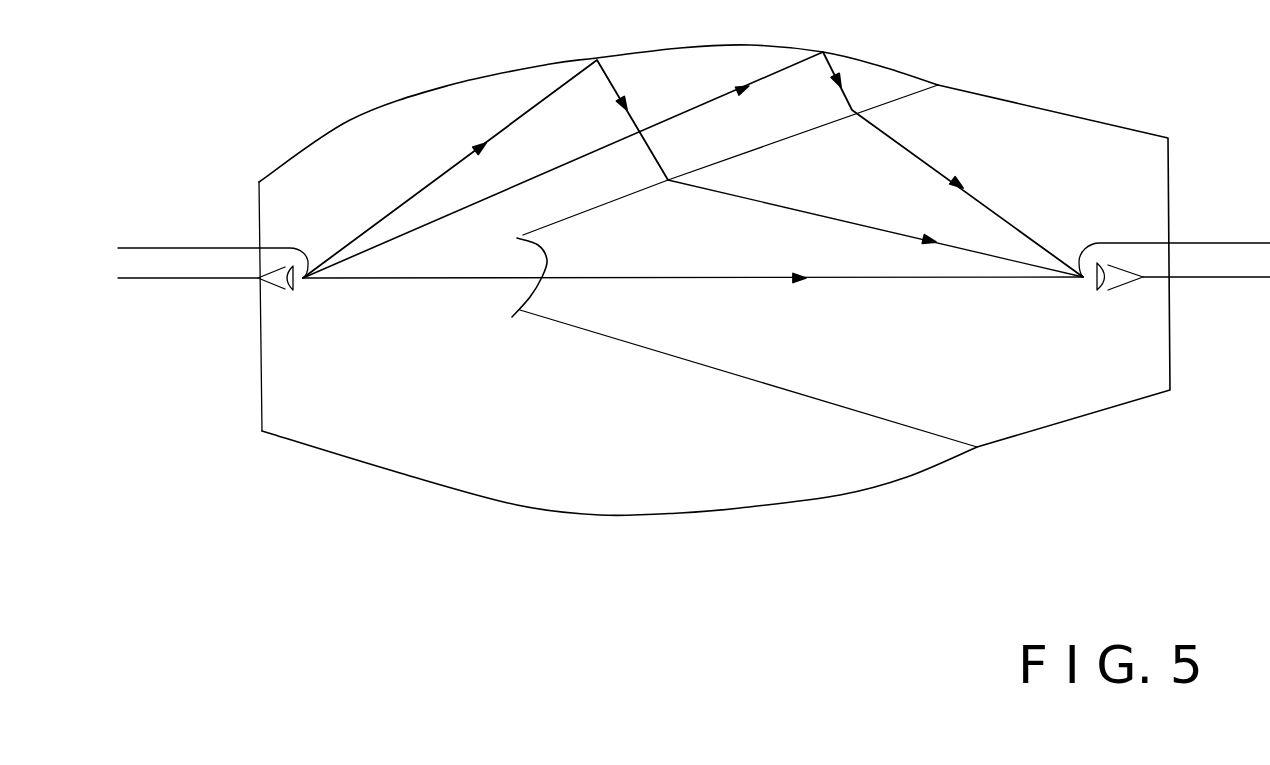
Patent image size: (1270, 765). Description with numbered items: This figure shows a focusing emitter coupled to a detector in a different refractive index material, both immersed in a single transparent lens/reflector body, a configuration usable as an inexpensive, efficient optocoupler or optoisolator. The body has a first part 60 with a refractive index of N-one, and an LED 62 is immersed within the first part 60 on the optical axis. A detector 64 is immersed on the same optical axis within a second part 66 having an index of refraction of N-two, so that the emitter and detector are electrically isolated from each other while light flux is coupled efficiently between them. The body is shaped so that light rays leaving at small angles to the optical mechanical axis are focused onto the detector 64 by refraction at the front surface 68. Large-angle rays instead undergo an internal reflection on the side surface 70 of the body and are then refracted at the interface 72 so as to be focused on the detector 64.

The first part 60 is at (430, 105).
The LED 62 is at (273, 300).
The detector 64 is at (1142, 288).
The second part 66 is at (1030, 115).
The front surface 68 is at (537, 292).
The side surface 70 is at (714, 57).
The interface 72 is at (750, 151).